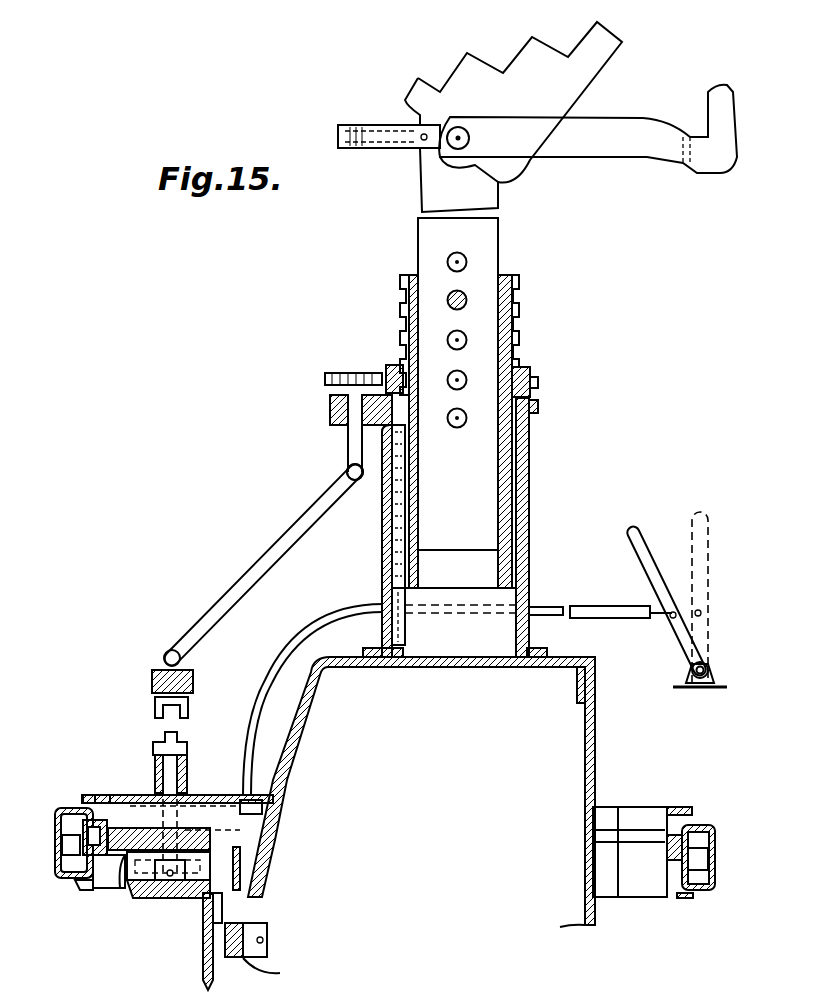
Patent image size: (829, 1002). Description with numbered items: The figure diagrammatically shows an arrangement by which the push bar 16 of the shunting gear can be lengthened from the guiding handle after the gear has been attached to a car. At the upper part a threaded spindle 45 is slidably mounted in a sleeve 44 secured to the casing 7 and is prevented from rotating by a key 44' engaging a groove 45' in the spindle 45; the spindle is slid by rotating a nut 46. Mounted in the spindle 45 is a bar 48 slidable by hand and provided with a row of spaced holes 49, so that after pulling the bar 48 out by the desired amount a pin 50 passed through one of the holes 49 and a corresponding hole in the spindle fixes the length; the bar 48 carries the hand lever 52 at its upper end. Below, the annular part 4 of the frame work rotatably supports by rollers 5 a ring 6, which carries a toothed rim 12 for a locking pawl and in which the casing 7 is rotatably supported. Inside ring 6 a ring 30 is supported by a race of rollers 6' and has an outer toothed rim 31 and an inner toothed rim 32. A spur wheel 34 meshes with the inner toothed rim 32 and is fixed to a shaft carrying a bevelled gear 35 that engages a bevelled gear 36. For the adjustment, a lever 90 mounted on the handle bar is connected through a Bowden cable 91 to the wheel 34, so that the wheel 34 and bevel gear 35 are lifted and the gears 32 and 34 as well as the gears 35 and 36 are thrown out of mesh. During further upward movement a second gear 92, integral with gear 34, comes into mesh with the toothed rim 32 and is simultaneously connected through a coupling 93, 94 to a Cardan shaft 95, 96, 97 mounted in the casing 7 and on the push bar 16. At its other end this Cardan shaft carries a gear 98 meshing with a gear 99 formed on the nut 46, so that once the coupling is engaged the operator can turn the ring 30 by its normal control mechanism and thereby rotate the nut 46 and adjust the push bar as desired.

The hand lever 52 is at (625, 150).
The bar 48 is at (488, 252).
The holes 49 is at (466, 264).
The pin 50 is at (466, 300).
The gear 98 is at (345, 372).
The nut 46 is at (524, 370).
The gear 99 is at (539, 383).
The Cardan shaft section 97 is at (350, 444).
The push bar 16 is at (530, 466).
The sleeve 44 is at (531, 431).
The threaded spindle 45 is at (480, 431).
The groove 45' is at (431, 506).
The key 44' is at (422, 619).
The Cardan shaft section 96 is at (266, 560).
The lever 90 is at (652, 572).
The Bowden cable 91 is at (283, 660).
The casing 7 is at (308, 702).
The coupling part 94 is at (189, 710).
The coupling part 93 is at (182, 754).
The Cardan shaft section 95 is at (157, 768).
The ring 30 is at (105, 795).
The outer toothed rim 31 is at (88, 795).
The inner toothed rim 32 is at (112, 830).
The spur wheel 34 is at (205, 828).
The rollers 6' is at (106, 838).
The ring 6 is at (109, 871).
The rollers 5 is at (71, 845).
The annular part 4 is at (66, 878).
The toothed rim 12 is at (82, 892).
The second gear 92 is at (120, 890).
The bevelled gear 35 is at (168, 889).
The bevelled gear 36 is at (203, 942).